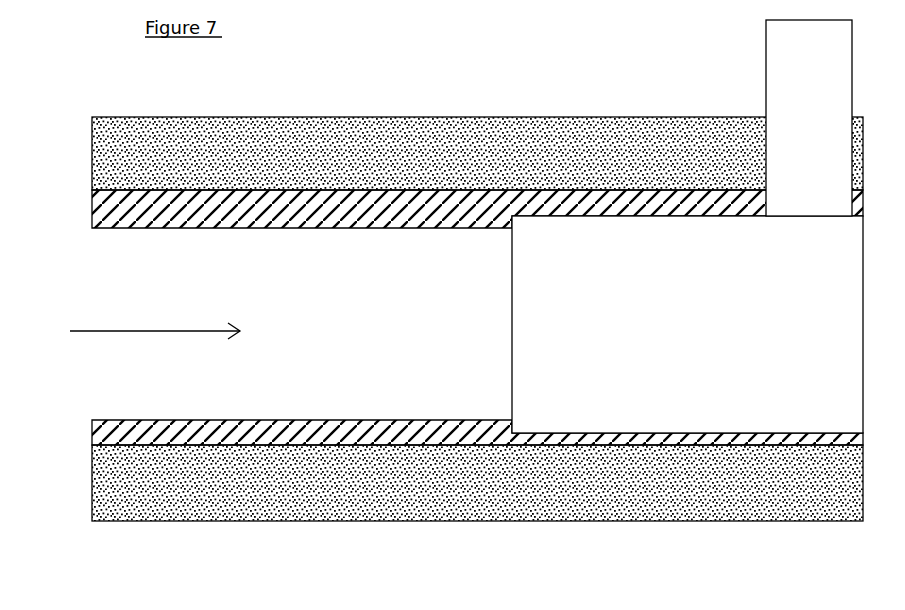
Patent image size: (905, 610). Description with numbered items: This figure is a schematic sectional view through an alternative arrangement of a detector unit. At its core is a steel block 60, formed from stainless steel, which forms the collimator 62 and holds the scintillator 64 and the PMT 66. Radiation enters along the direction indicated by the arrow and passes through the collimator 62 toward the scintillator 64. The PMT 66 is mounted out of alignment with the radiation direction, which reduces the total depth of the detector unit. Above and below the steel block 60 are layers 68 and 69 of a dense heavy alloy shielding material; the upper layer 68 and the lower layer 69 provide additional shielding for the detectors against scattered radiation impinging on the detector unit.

The steel block 60 is at (90, 222).
The collimator 62 is at (385, 348).
The scintillator 64 is at (684, 338).
The PMT 66 is at (785, 73).
The layer of dense heavy alloy shielding material 68 is at (542, 115).
The layer of dense heavy alloy shielding material 69 is at (492, 521).